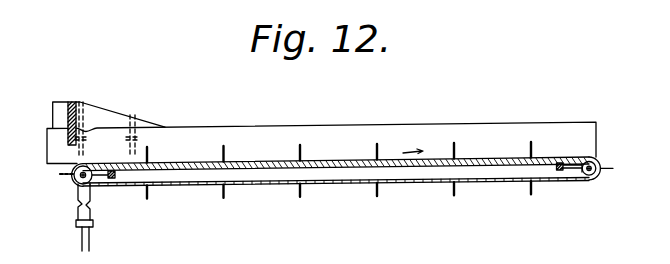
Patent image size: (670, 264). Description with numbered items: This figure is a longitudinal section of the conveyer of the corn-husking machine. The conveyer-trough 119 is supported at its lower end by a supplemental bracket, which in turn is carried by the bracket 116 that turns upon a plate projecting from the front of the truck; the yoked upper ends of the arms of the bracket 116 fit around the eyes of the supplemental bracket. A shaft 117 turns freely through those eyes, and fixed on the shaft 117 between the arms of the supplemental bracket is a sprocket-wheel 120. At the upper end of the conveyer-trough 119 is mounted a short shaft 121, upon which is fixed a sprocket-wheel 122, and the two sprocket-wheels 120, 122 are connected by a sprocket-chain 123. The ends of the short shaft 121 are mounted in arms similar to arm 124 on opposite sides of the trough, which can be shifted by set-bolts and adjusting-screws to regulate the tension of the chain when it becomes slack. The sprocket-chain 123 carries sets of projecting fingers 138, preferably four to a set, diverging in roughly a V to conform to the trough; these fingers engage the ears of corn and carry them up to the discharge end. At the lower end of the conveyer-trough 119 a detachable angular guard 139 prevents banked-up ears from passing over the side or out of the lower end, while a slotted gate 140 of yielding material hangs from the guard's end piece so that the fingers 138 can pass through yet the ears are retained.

The bracket 116 is at (80, 224).
The shaft 117 is at (75, 182).
The conveyer-trough 119 is at (430, 121).
The sprocket-wheel 120 is at (93, 185).
The short shaft 121 is at (592, 178).
The sprocket-wheel 122 is at (578, 173).
The sprocket-chain 123 is at (507, 184).
The arm 124 is at (562, 171).
The projecting fingers 138 is at (454, 196).
The angular guard 139 is at (113, 117).
The gate 140 is at (78, 110).